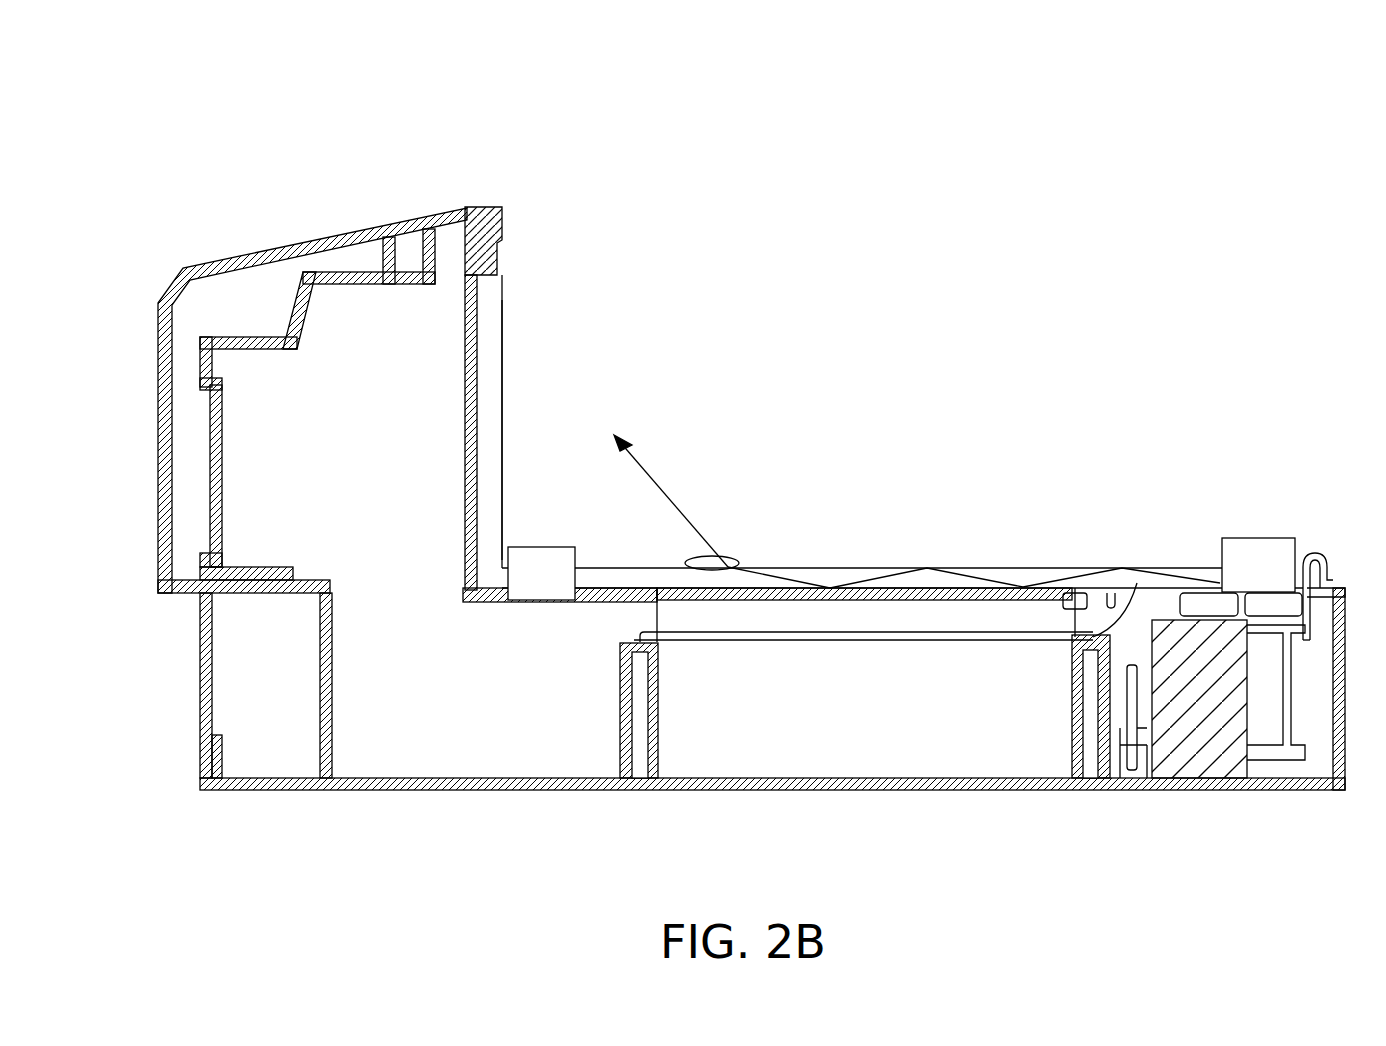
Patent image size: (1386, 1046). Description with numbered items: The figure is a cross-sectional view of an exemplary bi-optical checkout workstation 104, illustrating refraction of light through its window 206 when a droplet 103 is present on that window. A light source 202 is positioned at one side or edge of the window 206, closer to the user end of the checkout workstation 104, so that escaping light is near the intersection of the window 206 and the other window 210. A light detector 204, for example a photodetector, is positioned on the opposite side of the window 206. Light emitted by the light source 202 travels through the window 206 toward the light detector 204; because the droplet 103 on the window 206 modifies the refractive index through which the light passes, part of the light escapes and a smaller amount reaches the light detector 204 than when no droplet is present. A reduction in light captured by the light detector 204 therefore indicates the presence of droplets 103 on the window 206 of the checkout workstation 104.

The checkout workstation 104 is at (257, 102).
The other window 210 is at (503, 383).
The window 206 is at (1030, 568).
The droplet 103 is at (735, 560).
The light detector 204 is at (543, 509).
The light source 202 is at (1292, 511).